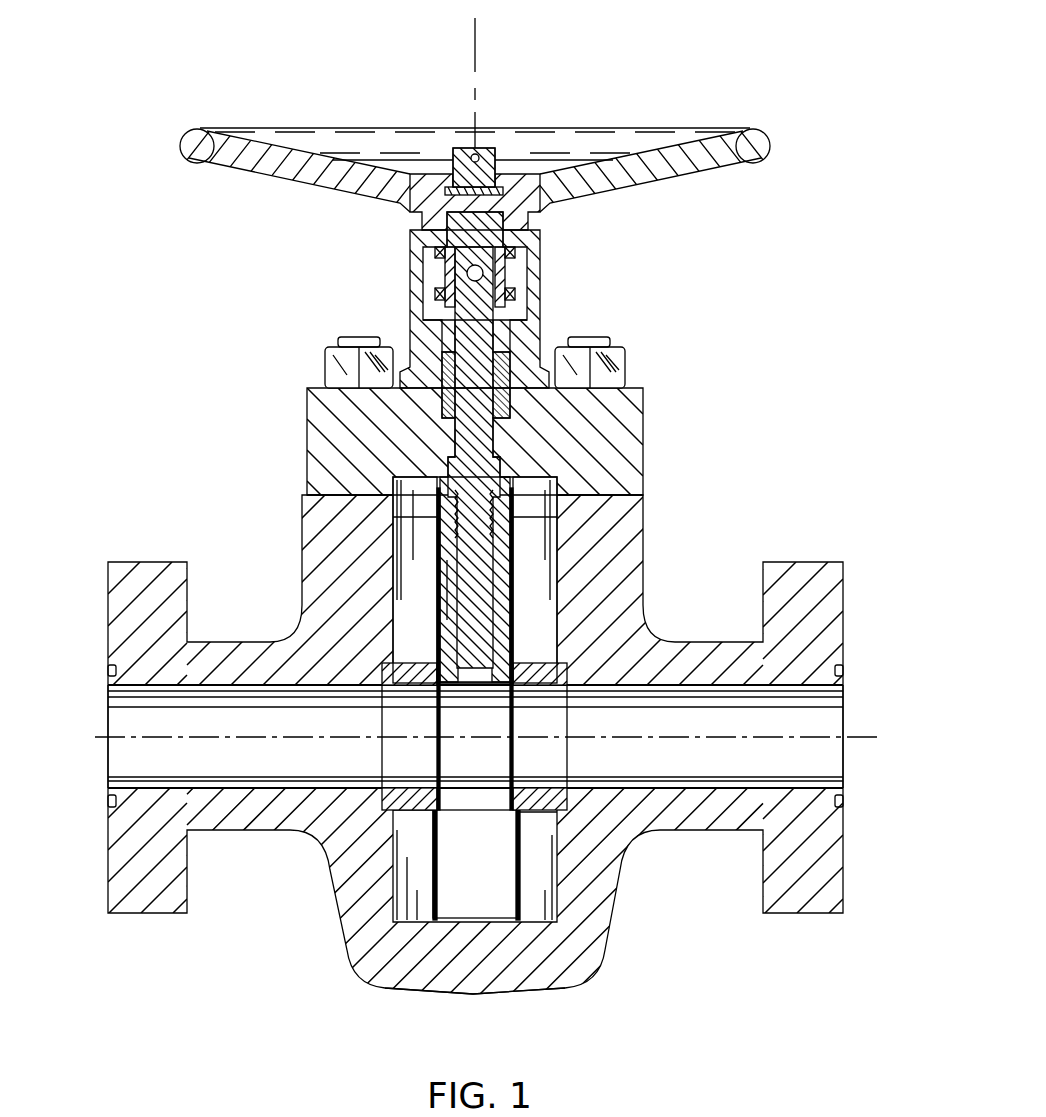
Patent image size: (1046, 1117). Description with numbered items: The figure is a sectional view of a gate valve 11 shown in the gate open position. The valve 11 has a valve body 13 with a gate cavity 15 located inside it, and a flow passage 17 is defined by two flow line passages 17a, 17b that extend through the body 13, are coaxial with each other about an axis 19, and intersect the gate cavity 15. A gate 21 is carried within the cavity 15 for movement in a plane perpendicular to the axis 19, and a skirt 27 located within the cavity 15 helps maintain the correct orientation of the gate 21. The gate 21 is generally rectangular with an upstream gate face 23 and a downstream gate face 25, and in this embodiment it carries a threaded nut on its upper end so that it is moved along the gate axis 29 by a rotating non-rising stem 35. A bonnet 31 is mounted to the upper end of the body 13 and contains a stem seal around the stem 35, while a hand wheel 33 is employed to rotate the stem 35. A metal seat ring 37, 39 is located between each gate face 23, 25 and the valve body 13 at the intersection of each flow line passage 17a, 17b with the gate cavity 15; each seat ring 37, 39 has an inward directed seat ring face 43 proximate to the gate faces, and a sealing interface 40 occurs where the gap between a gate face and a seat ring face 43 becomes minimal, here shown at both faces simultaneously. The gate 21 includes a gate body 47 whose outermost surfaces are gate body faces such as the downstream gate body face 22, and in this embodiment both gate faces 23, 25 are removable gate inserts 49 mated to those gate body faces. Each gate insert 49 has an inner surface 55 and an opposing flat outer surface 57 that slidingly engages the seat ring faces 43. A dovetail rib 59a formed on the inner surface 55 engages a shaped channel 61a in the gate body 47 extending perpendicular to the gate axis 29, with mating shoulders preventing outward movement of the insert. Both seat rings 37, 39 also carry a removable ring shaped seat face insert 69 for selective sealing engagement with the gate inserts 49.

The valve 11 is at (485, 670).
The valve body 13 is at (305, 530).
The gate cavity 15 is at (540, 872).
The flow passage 17 is at (225, 765).
The flow line passage 17a is at (152, 783).
The flow line passage 17b is at (808, 783).
The axis 19 is at (860, 735).
The gate 21 is at (500, 585).
The downstream gate body face 22 is at (512, 620).
The upstream gate face 23 is at (440, 572).
The downstream gate face 25 is at (497, 555).
The skirt 27 is at (545, 805).
The gate axis 29 is at (476, 40).
The bonnet 31 is at (640, 398).
The hand wheel 33 is at (768, 150).
The stem 35 is at (487, 347).
The seat ring 37 is at (400, 757).
The seat ring 39 is at (545, 757).
The sealing interface 40 is at (430, 660).
The seat ring face 43 is at (510, 762).
The gate body 47 is at (442, 548).
The removable gate insert 49 is at (433, 613).
The inner surface 55 is at (447, 590).
The outer surface 57 is at (355, 470).
The rib 59a is at (548, 478).
The channel 61a is at (538, 640).
The seat face insert 69 is at (553, 812).